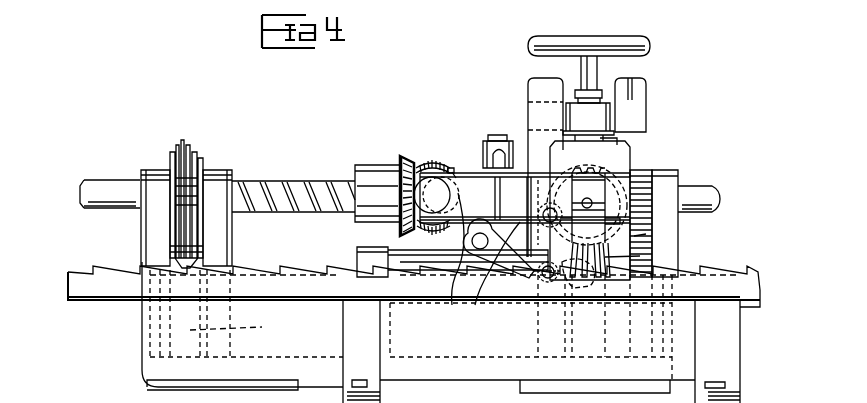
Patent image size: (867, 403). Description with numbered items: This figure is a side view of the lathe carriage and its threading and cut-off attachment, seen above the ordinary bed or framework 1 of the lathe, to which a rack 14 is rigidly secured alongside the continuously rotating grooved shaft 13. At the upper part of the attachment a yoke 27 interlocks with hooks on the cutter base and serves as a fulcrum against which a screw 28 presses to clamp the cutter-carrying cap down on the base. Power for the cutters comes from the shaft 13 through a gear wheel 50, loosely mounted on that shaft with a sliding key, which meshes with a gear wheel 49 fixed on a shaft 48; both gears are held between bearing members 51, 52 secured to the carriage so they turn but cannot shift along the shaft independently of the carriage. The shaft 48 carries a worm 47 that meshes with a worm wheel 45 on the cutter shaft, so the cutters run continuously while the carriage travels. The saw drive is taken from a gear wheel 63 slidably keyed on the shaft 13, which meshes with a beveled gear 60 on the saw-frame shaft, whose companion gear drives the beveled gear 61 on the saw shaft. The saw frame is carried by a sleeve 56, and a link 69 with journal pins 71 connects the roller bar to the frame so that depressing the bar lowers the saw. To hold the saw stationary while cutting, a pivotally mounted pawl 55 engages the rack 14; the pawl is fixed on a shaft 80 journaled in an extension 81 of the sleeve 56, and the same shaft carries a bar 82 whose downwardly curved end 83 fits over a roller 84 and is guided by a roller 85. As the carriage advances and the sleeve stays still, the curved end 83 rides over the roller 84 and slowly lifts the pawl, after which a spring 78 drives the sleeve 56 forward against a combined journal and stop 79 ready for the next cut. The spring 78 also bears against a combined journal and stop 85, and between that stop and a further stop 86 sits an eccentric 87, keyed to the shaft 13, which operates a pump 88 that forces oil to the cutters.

The bed or framework 1 is at (441, 332).
The shaft 13 is at (102, 193).
The rack 14 is at (414, 286).
The yoke 27 is at (630, 105).
The screw 28 is at (590, 90).
The worm wheel 45 is at (584, 180).
The worm 47 is at (640, 256).
The shaft 48 is at (422, 258).
The gear wheel 49 is at (646, 234).
The gear wheel 50 is at (640, 196).
The bearing member 51 is at (667, 182).
The bearing member 52 is at (608, 178).
The pawl 55 is at (475, 305).
The sleeve 56 is at (452, 172).
The beveled gear 60 is at (436, 168).
The beveled gear 61 is at (461, 172).
The gear wheel 63 is at (407, 160).
The link 69 is at (497, 132).
The journal pins 71 is at (496, 150).
The spring 78 is at (291, 184).
The combined journal and stop 79 is at (540, 152).
The shaft 80 is at (480, 233).
The extension 81 is at (452, 305).
The bar 82 is at (535, 237).
The downwardly curved end 83 is at (592, 288).
The roller 84 is at (549, 282).
The combined journal and stop 85 is at (221, 188).
The stop 86 is at (150, 185).
The eccentric 87 is at (198, 150).
The pump 88 is at (237, 329).